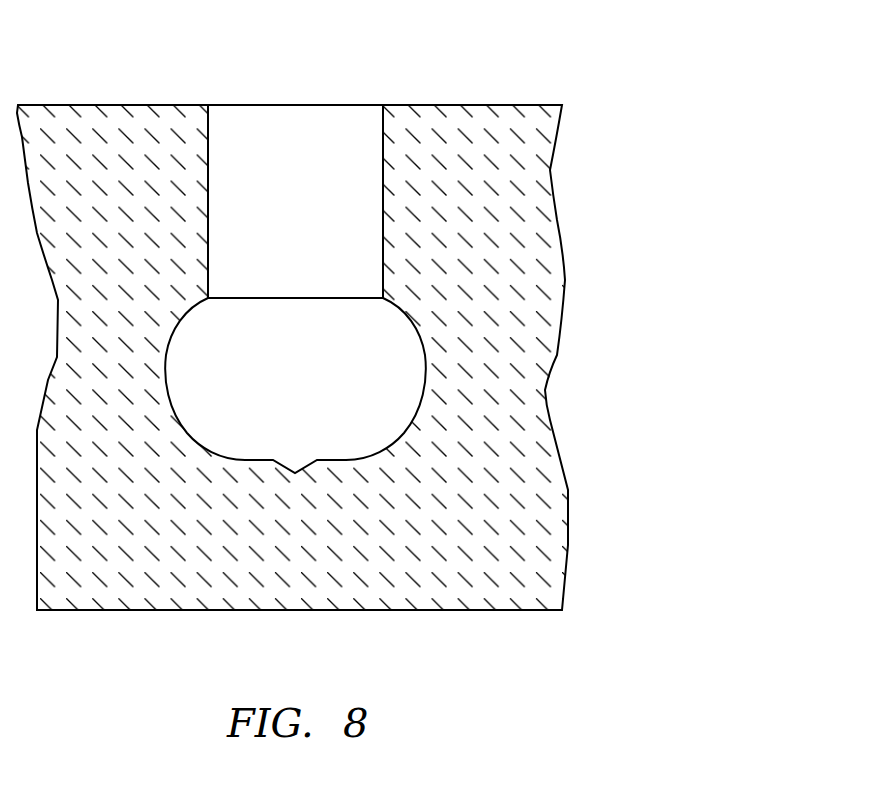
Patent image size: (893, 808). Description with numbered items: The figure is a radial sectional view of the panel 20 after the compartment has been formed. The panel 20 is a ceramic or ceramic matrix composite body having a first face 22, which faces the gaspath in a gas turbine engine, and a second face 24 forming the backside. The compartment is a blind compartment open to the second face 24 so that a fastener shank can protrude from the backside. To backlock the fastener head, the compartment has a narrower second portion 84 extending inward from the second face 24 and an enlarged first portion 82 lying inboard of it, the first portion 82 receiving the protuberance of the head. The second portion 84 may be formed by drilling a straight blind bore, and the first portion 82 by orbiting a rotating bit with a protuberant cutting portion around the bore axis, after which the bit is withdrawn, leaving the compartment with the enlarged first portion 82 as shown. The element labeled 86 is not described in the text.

The panel 20 is at (515, 353).
The first face 22 is at (540, 611).
The second face 24 is at (508, 105).
The first portion 82 is at (315, 386).
The second portion 84 is at (315, 216).
The trench opening 86 is at (330, 117).